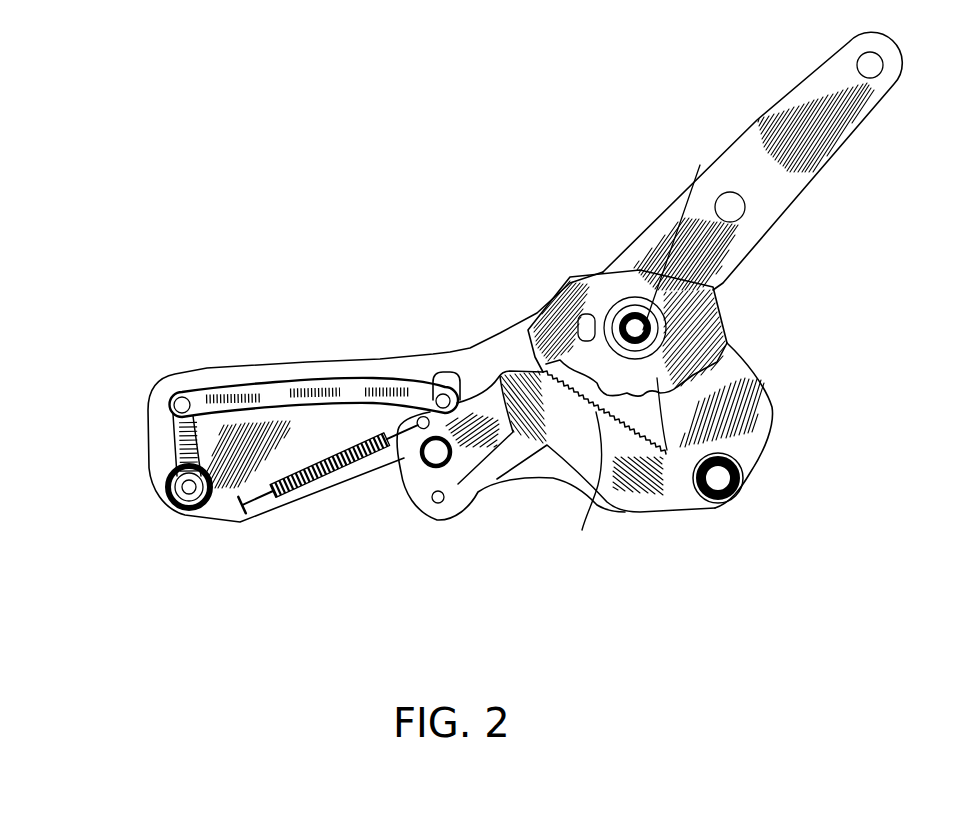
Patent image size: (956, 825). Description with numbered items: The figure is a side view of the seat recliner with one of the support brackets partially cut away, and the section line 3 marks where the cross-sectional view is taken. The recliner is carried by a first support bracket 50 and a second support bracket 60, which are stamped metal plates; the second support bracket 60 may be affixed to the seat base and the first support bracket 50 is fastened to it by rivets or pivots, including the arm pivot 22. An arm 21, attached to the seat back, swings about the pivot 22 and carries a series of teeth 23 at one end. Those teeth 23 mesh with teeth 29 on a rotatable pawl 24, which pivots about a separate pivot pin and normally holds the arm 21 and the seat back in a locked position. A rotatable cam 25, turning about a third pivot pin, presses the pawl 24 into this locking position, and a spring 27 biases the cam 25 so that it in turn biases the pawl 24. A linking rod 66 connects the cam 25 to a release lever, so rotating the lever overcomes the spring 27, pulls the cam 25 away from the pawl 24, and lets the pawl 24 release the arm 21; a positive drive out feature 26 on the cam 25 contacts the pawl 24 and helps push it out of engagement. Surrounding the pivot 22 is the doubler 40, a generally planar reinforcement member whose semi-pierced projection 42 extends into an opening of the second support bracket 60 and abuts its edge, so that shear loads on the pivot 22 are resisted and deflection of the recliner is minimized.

The section line 3- 3 is at (36, 613).
The arm 21 is at (757, 120).
The arm pivot 22 is at (642, 332).
The teeth 23 is at (612, 446).
The pawl 24 is at (483, 490).
The cam 25 is at (480, 413).
The positive drive out feature 26 is at (450, 372).
The spring 27 is at (348, 463).
The teeth 29 is at (582, 530).
The doubler 40 is at (595, 323).
The projection 42 is at (590, 320).
The first support bracket 50 is at (181, 372).
The second support bracket 60 is at (727, 340).
The linking rod 66 is at (302, 380).